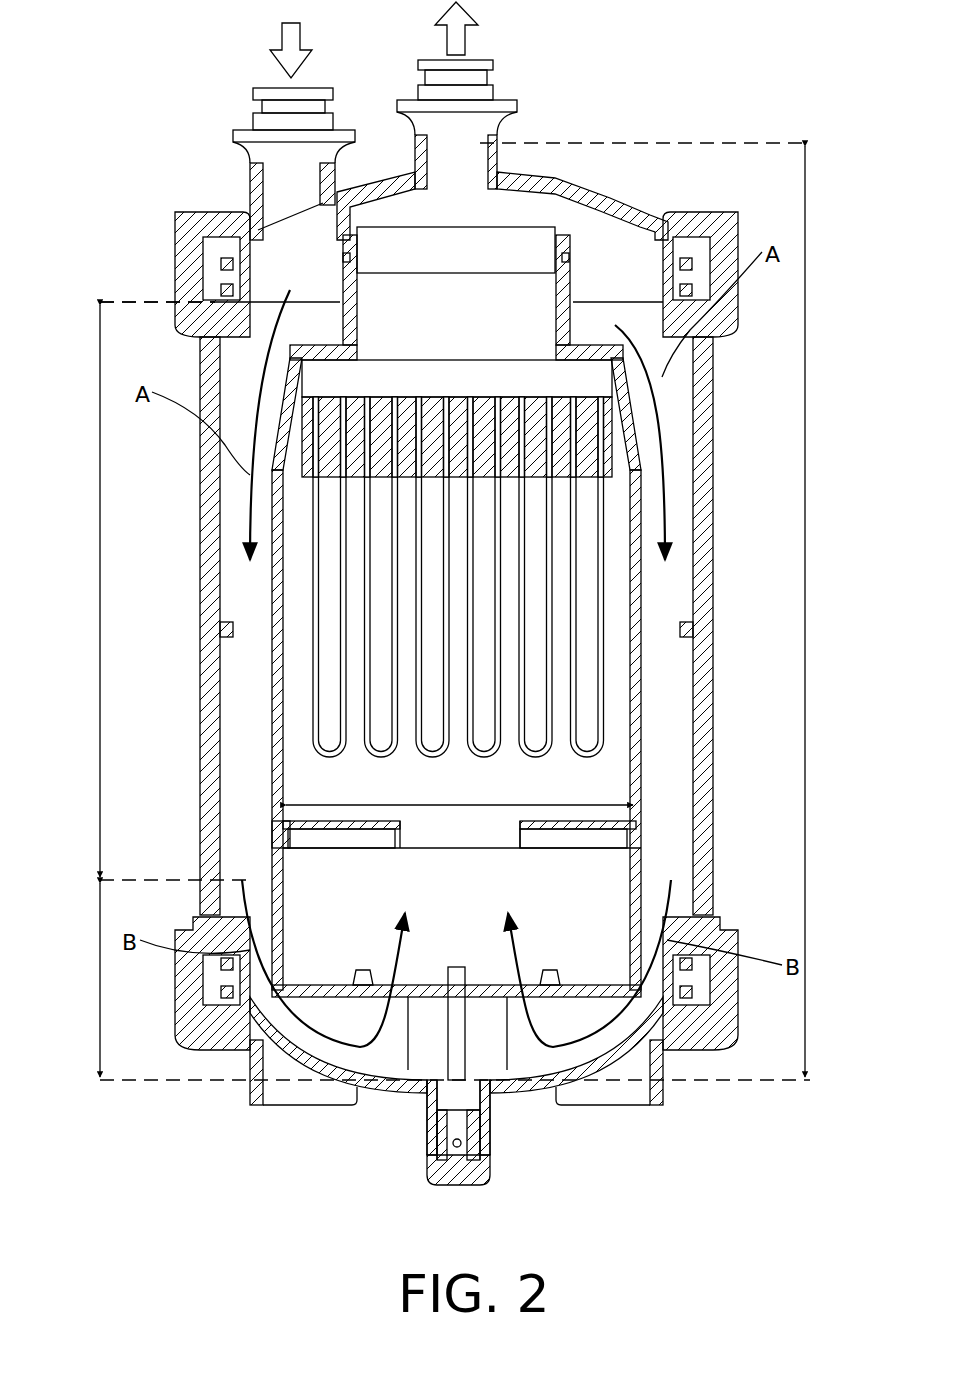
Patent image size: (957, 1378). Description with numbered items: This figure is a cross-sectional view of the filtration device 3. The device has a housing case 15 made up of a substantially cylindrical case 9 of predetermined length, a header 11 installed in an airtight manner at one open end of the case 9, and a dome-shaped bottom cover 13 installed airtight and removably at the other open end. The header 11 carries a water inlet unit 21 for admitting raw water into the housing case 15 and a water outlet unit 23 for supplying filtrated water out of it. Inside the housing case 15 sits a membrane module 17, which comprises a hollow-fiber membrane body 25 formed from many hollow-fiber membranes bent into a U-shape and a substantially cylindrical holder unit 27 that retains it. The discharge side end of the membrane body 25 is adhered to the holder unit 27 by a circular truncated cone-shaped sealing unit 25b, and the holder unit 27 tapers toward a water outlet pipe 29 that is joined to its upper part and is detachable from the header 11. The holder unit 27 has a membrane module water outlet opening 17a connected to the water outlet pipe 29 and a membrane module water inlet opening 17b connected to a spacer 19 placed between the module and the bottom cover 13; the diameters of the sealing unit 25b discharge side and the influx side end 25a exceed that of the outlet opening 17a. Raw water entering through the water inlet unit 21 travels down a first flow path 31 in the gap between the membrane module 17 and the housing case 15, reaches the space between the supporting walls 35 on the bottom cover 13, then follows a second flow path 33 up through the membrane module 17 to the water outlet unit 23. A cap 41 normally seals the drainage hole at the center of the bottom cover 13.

The filtration device 3 is at (732, 183).
The case 9 is at (712, 482).
The header 11 is at (533, 183).
The bottom cover 13 is at (555, 1085).
The housing case 15 is at (722, 437).
The membrane module 17 is at (150, 513).
The membrane module water outlet opening 17a is at (468, 320).
The membrane module water inlet opening 17b is at (460, 842).
The spacer 19 is at (282, 850).
The water inlet unit 21 is at (233, 133).
The water outlet unit 23 is at (505, 112).
The hollow-fiber membrane body 25 is at (315, 548).
The influx side end 25a is at (459, 792).
The sealing unit 25b is at (487, 398).
The holder unit 27 is at (272, 612).
The water outlet pipe 29 is at (568, 255).
The first flow path 31 is at (158, 591).
The second flow path 33 is at (438, 981).
The supporting wall 35 is at (660, 610).
The cap 41 is at (490, 1175).